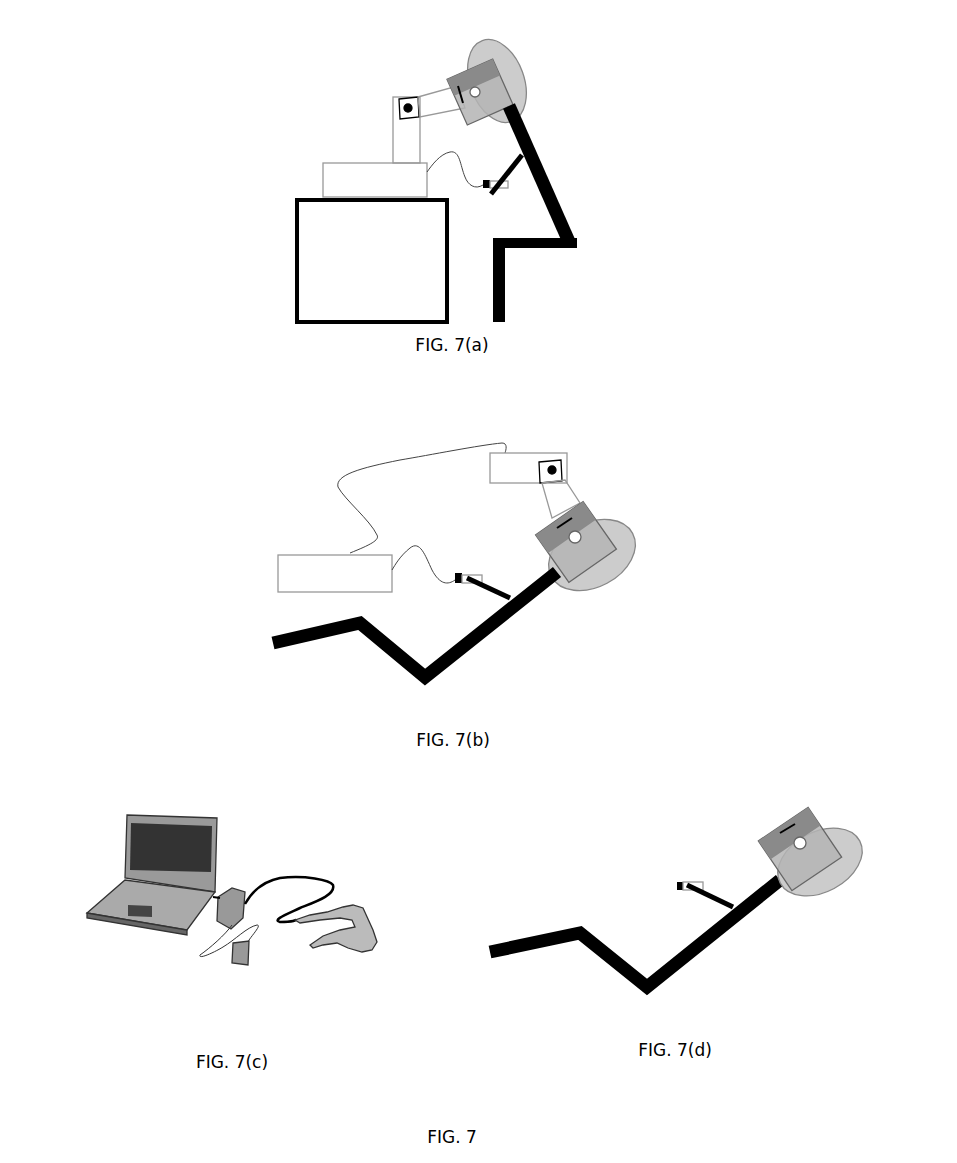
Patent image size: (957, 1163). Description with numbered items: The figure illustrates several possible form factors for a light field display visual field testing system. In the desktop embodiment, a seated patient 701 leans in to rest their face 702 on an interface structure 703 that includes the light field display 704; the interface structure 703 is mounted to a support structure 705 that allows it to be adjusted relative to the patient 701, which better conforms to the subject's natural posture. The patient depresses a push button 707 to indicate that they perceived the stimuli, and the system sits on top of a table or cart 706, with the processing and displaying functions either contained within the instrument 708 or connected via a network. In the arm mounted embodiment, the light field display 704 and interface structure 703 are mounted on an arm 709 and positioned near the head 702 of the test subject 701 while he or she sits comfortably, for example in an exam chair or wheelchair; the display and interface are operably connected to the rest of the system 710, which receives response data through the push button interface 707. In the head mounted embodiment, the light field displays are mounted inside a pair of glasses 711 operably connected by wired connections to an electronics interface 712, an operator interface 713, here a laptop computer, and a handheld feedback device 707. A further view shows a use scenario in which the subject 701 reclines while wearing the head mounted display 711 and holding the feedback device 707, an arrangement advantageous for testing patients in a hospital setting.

In FIG. 7A, the patient 701 is at (537, 135).
In FIG. 7B, the patient 701 is at (522, 627).
In FIG. 7D, the patient 701 is at (738, 933).
In FIG. 7A, the face 702 is at (507, 50).
In FIG. 7B, the face 702 is at (632, 563).
In FIG. 7A, the interface structure 703 is at (447, 80).
In FIG. 7B, the interface structure 703 is at (602, 511).
In FIG. 7A, the light field display 704 is at (460, 92).
In FIG. 7B, the light field display 704 is at (582, 509).
In FIG. 7A, the support structure 705 is at (387, 107).
In FIG. 7A, the table or cart 706 is at (288, 237).
In FIG. 7A, the push button 707 is at (508, 185).
In FIG. 7B, the push button 707 is at (457, 568).
In FIG. 7C, the push button 707 is at (230, 965).
In FIG. 7D, the push button 707 is at (677, 872).
In FIG. 7A, the instrument 708 is at (320, 172).
In FIG. 7B, the arm 709 is at (523, 443).
In FIG. 7B, the rest of the system 710 is at (272, 565).
In FIG. 7C, the pair of glasses 711 is at (363, 910).
In FIG. 7D, the pair of glasses 711 is at (772, 823).
In FIG. 7C, the electronics interface 712 is at (243, 885).
In FIG. 7C, the operator interface 713 is at (110, 868).